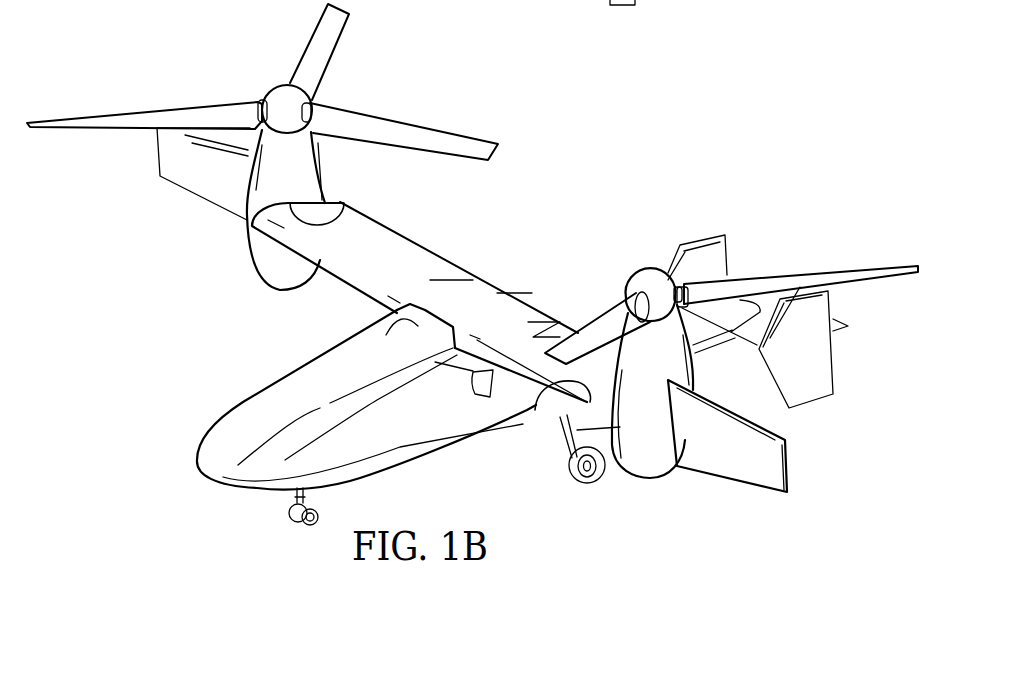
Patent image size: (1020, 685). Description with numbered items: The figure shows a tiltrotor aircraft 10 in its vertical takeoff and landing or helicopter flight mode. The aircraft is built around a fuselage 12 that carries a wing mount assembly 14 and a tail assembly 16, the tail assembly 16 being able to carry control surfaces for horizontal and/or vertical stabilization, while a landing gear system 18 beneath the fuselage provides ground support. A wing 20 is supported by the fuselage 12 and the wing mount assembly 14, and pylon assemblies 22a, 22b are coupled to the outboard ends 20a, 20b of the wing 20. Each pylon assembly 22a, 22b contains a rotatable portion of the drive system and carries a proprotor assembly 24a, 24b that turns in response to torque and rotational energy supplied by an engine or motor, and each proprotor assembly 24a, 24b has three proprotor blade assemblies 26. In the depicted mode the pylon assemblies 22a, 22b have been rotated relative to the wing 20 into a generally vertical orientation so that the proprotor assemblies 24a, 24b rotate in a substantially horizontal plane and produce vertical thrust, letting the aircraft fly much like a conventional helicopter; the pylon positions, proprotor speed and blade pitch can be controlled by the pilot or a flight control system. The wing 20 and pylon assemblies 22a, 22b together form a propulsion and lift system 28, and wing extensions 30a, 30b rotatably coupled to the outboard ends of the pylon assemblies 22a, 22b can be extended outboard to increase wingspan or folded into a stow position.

The tiltrotor aircraft 10 is at (618, 134).
The fuselage 12 is at (240, 407).
The wing mount assembly 14 is at (387, 333).
The tail assembly 16 is at (720, 233).
The landing gear system 18 is at (302, 528).
The wing 20 is at (477, 302).
The outboard end of wing 20a is at (540, 407).
The outboard end of wing 20b is at (327, 212).
The pylon assembly 22a is at (652, 482).
The pylon assembly 22b is at (272, 290).
The proprotor assembly 24a is at (650, 268).
The proprotor assembly 24b is at (277, 82).
The proprotor blade assemblies 26 is at (113, 115).
The propulsion and lift system 28 is at (411, 286).
The wing extension 30a is at (794, 462).
The wing extension 30b is at (187, 183).